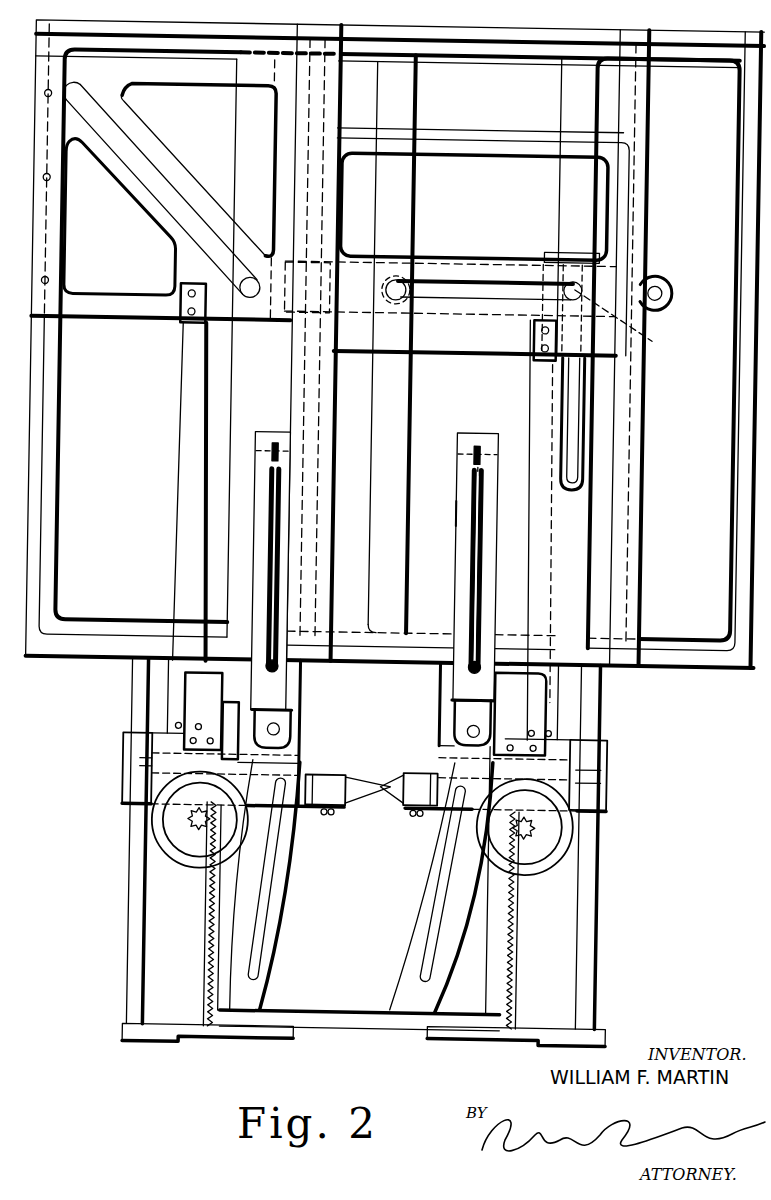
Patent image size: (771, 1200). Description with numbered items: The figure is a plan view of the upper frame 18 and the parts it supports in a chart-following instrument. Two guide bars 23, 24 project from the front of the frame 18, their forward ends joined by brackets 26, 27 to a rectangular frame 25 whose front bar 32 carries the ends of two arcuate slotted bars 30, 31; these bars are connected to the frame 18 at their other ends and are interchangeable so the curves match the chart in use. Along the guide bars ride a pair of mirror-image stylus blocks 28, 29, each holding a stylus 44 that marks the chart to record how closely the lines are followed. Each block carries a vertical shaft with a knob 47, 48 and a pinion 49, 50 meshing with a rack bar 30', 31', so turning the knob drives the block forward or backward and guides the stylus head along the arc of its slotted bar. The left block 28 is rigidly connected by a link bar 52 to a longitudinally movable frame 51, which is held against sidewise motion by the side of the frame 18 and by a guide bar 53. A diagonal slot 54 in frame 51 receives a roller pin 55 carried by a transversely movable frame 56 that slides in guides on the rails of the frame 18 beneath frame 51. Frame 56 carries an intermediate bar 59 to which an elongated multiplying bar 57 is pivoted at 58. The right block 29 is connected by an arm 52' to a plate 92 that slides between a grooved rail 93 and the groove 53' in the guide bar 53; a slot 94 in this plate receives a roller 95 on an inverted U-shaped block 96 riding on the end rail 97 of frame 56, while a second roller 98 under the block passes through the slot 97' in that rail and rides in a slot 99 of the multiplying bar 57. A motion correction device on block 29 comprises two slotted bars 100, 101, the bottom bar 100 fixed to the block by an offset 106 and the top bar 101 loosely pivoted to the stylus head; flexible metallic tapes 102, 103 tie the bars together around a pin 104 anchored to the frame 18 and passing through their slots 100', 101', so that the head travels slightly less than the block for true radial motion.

The second frame 18 is at (108, 656).
The guide bar 23 is at (133, 960).
The guide bar 24 is at (586, 938).
The rectangular frame 25 is at (207, 878).
The bracket 26 is at (136, 1037).
The bracket 27 is at (545, 1040).
The stylus block 28 is at (165, 745).
The stylus block 29 is at (577, 765).
The arcuate slotted bar 30 is at (281, 885).
The rack bar 30' is at (135, 914).
The arcuate slotted bar 31 is at (430, 887).
The rack bar 31' is at (574, 888).
The front bar 32 is at (278, 1018).
The stylus 44 is at (385, 790).
The hand wheel or knob 47 is at (173, 841).
The hand wheel or knob 48 is at (568, 827).
The pinion 49 is at (192, 840).
The pinion 50 is at (535, 833).
The longitudinally movable frame 51 is at (122, 318).
The link bar 52 is at (164, 536).
The arm 52' is at (607, 530).
The guide bar 53 is at (265, 342).
The groove 53' is at (375, 338).
The diagonal slot 54 is at (177, 208).
The pin 55 is at (244, 292).
The transversely movable frame 56 is at (236, 397).
The multiplying bar 57 is at (664, 306).
The pivot 58 is at (401, 285).
The intermediate bar 59 is at (410, 207).
The plate 92 is at (491, 345).
The rail 93 is at (539, 362).
The slot 94 is at (476, 295).
The roller 95 is at (569, 283).
The inverted U-shaped block 96 is at (572, 255).
The end rail 97 is at (664, 348).
The slot 97' is at (625, 424).
The roller 98 is at (590, 297).
The slot 99 is at (657, 289).
The slotted bar 100 is at (458, 586).
The slot 100' is at (504, 476).
The slotted bar 101 is at (443, 568).
The slot 101' is at (438, 513).
The flexible metallic tape 102 is at (469, 582).
The flexible metallic tape 103 is at (482, 560).
The pin 104 is at (484, 650).
The offset 106 is at (536, 712).